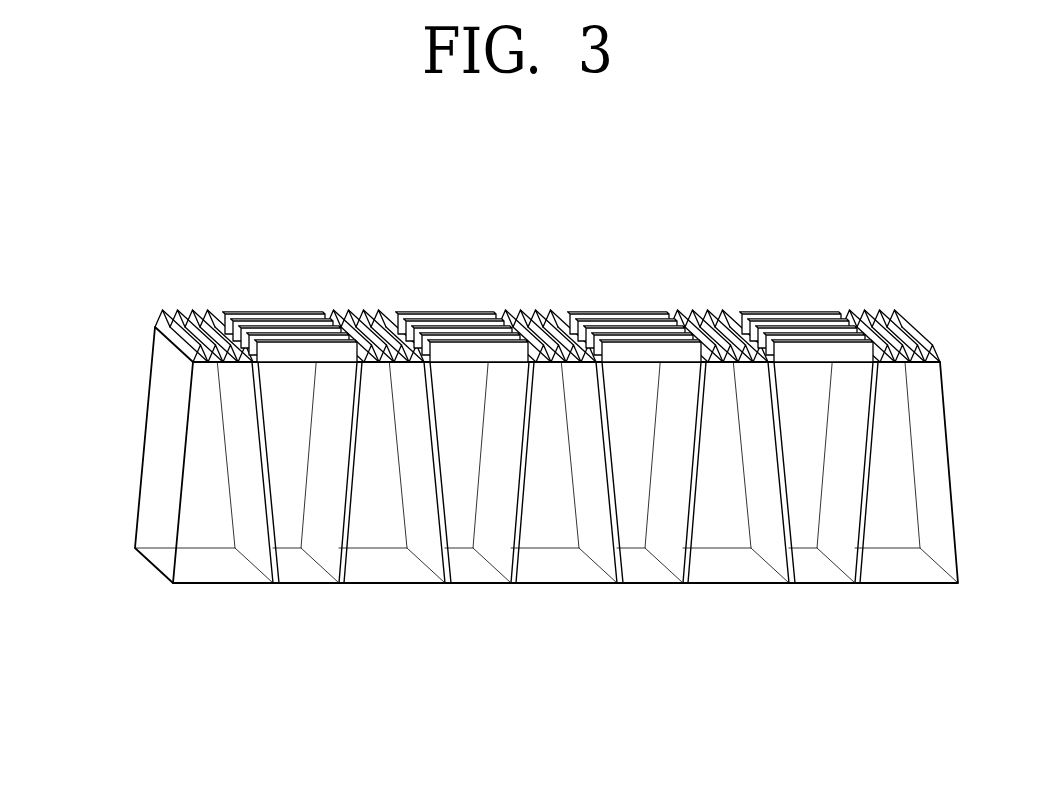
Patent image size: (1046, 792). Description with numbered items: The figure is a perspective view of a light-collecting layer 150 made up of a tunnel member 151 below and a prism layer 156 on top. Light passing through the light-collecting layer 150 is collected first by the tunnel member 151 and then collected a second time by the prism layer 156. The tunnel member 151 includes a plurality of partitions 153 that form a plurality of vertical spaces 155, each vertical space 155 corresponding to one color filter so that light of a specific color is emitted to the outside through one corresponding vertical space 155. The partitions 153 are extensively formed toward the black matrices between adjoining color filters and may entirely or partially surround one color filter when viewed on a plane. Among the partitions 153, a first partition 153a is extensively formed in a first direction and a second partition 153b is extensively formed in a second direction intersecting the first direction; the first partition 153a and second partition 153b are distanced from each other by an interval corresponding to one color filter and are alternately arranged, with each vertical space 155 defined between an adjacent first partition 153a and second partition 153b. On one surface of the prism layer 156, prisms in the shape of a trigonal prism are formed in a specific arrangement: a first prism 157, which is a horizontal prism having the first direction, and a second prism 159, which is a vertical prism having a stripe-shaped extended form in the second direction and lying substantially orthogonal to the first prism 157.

The light-collecting layer 150 is at (500, 431).
The tunnel member 151 is at (123, 455).
The partitions 153 is at (547, 541).
The first partition 153a is at (270, 540).
The second partition 153b is at (350, 542).
The vertical space 155 is at (460, 467).
The prism layer 156 is at (500, 306).
The first prism 157 is at (190, 328).
The second prism 159 is at (280, 323).